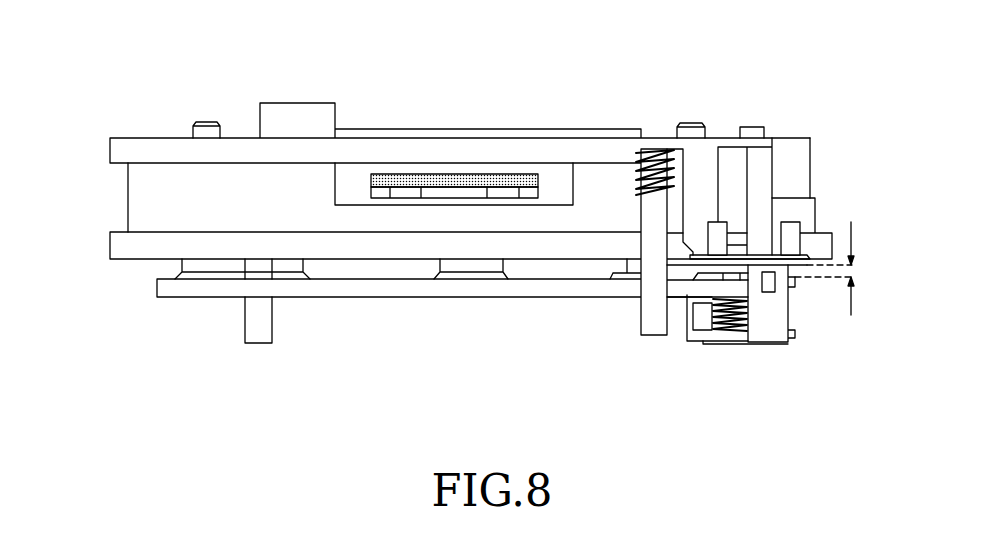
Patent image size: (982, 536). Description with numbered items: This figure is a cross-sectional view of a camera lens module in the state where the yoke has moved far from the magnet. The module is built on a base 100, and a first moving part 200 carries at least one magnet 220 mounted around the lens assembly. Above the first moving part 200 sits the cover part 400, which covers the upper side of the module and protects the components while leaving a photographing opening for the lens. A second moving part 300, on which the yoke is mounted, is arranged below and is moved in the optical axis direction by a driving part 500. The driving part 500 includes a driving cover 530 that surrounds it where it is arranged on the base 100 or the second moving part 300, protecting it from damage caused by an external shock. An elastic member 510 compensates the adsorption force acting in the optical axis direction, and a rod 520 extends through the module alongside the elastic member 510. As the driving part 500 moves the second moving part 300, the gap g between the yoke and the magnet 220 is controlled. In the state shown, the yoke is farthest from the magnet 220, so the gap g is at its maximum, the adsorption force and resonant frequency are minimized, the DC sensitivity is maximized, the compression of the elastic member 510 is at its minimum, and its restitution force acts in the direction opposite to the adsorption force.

The base 100 is at (140, 200).
The first moving part 200 is at (350, 183).
The magnet 220 is at (454, 179).
The second moving part 300 is at (194, 287).
The cover part 400 is at (115, 149).
The driving part 500 is at (728, 330).
The elastic member 510 is at (655, 152).
The rod 520 is at (653, 322).
The driving cover 530 is at (771, 328).
The gap g is at (835, 268).